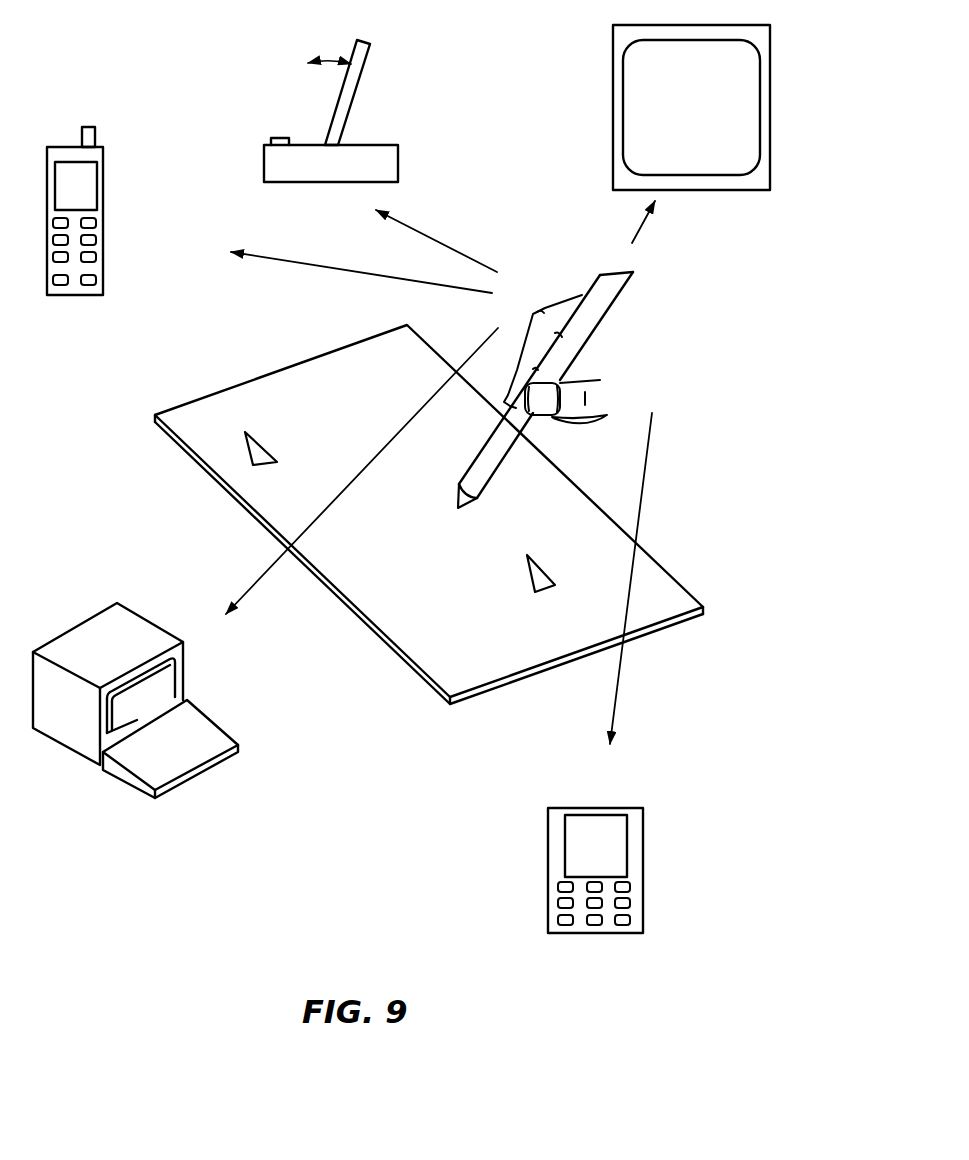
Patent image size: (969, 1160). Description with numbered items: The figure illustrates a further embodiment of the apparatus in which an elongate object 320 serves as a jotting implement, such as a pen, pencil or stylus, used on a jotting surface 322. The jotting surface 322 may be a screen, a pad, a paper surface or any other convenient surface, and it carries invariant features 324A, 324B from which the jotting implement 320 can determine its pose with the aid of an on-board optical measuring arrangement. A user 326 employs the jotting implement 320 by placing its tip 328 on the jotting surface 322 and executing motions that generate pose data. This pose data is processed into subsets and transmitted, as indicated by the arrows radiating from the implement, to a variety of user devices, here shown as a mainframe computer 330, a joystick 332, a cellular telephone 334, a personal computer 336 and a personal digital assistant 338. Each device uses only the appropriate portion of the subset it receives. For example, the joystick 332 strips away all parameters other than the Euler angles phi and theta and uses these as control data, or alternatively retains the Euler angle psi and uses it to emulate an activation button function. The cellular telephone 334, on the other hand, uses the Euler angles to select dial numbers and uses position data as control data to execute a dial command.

The elongate object / jotting implement 320 is at (597, 330).
The jotting surface 322 is at (300, 378).
The invariant feature 324A is at (263, 443).
The invariant feature 324B is at (527, 575).
The user 326 is at (568, 298).
The tip 328 is at (457, 508).
The mainframe computer 330 is at (706, 121).
The joystick 332 is at (398, 152).
The cellular telephone 334 is at (103, 170).
The personal computer 336 is at (77, 627).
The personal digital assistant 338 is at (578, 806).